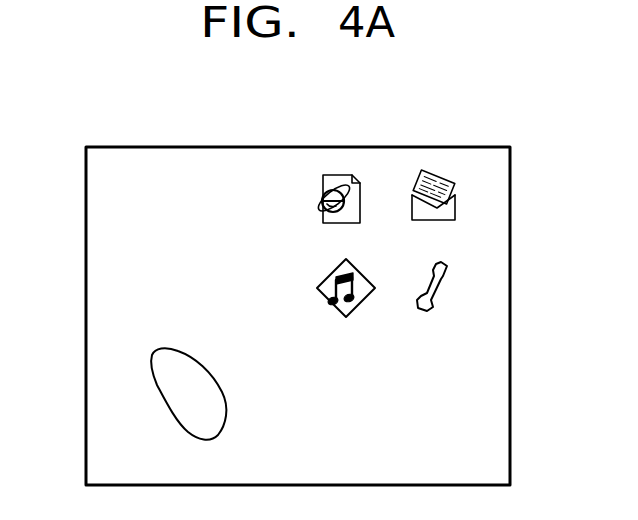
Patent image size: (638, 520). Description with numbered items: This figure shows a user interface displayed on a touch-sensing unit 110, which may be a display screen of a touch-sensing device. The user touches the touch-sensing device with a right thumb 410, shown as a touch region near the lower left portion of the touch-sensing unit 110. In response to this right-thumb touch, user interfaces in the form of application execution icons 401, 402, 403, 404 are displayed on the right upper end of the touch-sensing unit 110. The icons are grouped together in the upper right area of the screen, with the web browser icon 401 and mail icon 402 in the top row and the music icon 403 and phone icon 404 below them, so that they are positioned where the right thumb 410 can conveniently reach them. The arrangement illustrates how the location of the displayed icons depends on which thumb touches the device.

The touch-sensing unit 110 is at (192, 147).
The application execution icon 401 is at (326, 177).
The application execution icon 402 is at (443, 183).
The application execution icon 403 is at (362, 303).
The application execution icon 404 is at (447, 269).
The right thumb 410 is at (150, 363).